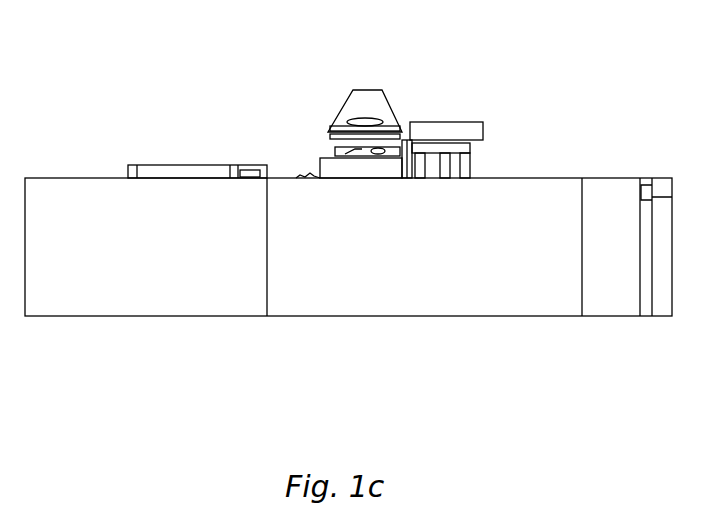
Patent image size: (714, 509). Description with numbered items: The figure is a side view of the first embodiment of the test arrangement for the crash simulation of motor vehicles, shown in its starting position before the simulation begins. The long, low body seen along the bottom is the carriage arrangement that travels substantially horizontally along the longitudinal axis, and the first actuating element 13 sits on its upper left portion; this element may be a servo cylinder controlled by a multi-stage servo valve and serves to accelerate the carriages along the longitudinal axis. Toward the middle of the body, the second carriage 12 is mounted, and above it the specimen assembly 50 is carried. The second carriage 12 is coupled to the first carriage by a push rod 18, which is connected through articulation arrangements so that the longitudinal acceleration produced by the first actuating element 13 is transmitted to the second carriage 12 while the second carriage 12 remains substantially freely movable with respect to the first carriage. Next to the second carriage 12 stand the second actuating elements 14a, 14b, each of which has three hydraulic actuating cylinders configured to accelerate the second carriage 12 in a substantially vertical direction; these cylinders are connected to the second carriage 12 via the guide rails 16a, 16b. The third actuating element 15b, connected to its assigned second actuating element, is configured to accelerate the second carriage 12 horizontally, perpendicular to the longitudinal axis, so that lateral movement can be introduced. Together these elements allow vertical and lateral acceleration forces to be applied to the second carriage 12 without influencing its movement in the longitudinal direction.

The first actuating element 13 is at (172, 175).
The specimen assembly 50 is at (369, 90).
The second carriage 12 is at (390, 166).
The second actuating element 14a is at (334, 176).
The push rod 18 is at (316, 176).
The guide rail 16b is at (470, 135).
The second actuating element 14b is at (420, 158).
The third actuating element 15b is at (442, 165).
The guide rail 16a is at (403, 160).